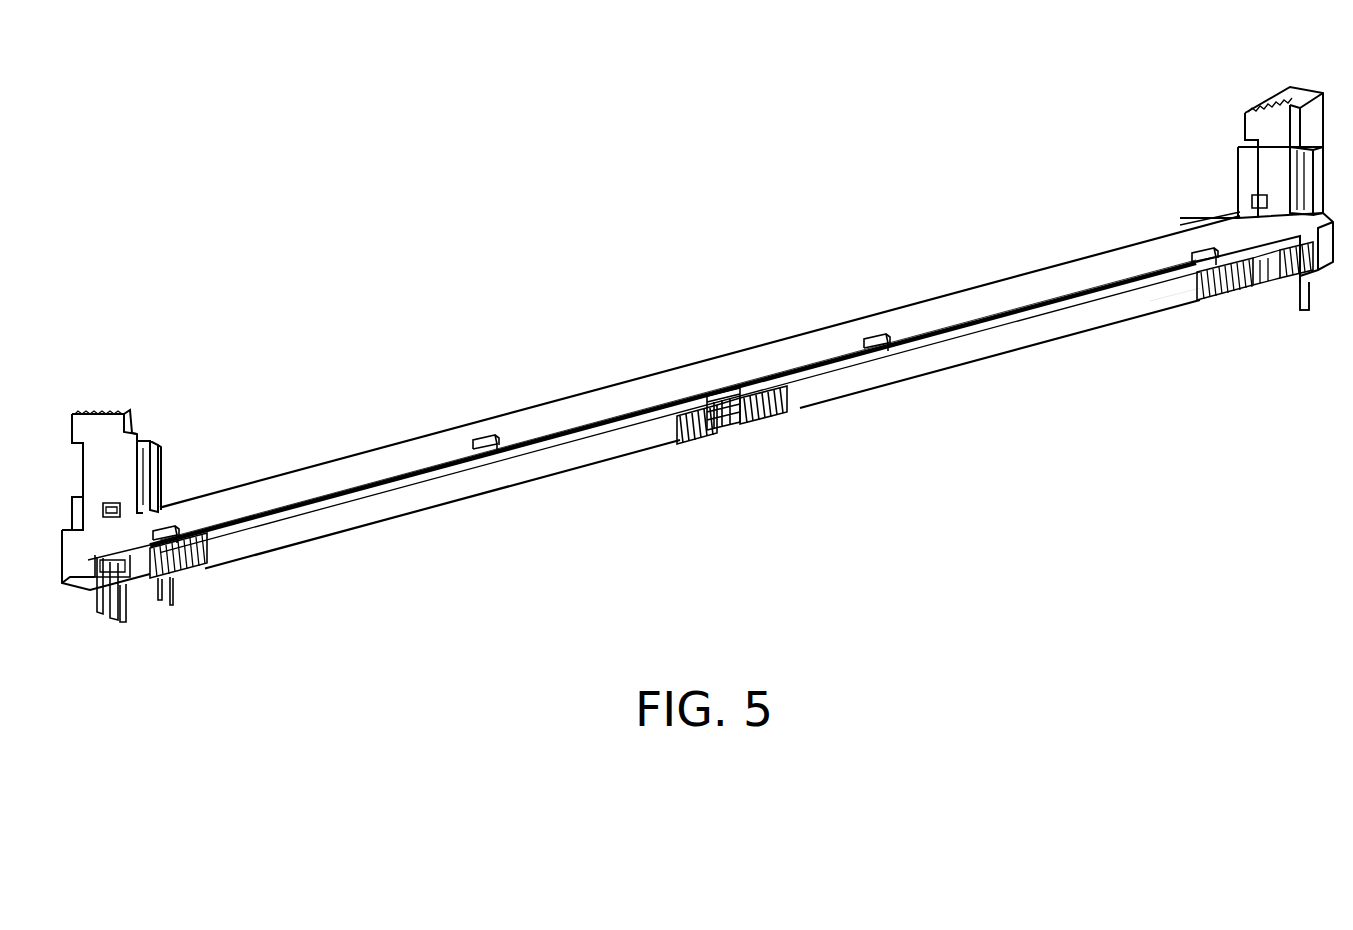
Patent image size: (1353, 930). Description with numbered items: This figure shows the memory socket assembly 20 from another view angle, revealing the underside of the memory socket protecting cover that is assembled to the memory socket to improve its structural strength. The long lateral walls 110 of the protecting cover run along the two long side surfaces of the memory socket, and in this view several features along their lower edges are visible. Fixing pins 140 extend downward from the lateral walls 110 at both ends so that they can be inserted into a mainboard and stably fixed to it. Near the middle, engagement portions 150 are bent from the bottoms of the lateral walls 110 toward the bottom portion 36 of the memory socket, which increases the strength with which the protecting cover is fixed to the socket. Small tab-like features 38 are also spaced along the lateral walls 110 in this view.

The memory socket assembly 20 is at (1152, 98).
The lateral walls 110 is at (963, 302).
The bottom portion 36 is at (1150, 312).
The latch tab 38 is at (483, 456).
The engagement portion 150 is at (718, 432).
The fixing pin 140 is at (123, 625).